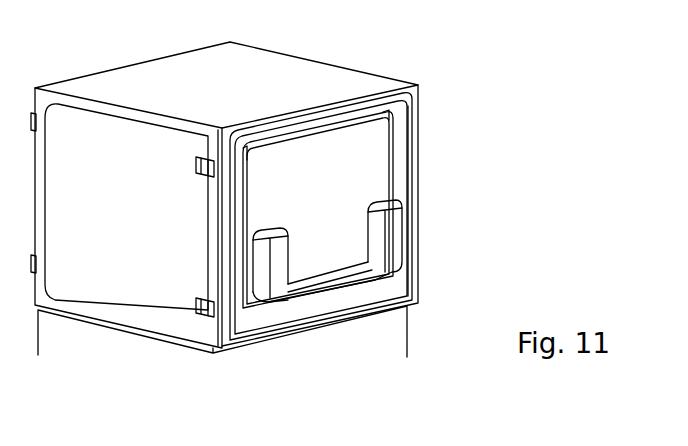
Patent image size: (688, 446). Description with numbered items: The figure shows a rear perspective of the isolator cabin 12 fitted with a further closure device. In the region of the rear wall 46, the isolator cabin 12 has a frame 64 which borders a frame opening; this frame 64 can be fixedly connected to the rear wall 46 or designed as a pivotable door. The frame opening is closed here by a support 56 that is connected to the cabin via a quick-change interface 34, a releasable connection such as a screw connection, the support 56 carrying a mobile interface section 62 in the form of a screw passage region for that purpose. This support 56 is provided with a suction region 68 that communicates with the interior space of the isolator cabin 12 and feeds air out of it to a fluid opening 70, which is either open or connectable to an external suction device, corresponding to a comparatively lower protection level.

The isolator cabin 12 is at (460, 191).
The quick-change interface 34 is at (367, 208).
The rear wall 46 is at (418, 86).
The support 56 is at (373, 158).
The mobile interface section 62 is at (254, 141).
The frame 64 is at (400, 122).
The suction region 68 is at (379, 300).
The fluid opening 70 is at (398, 266).